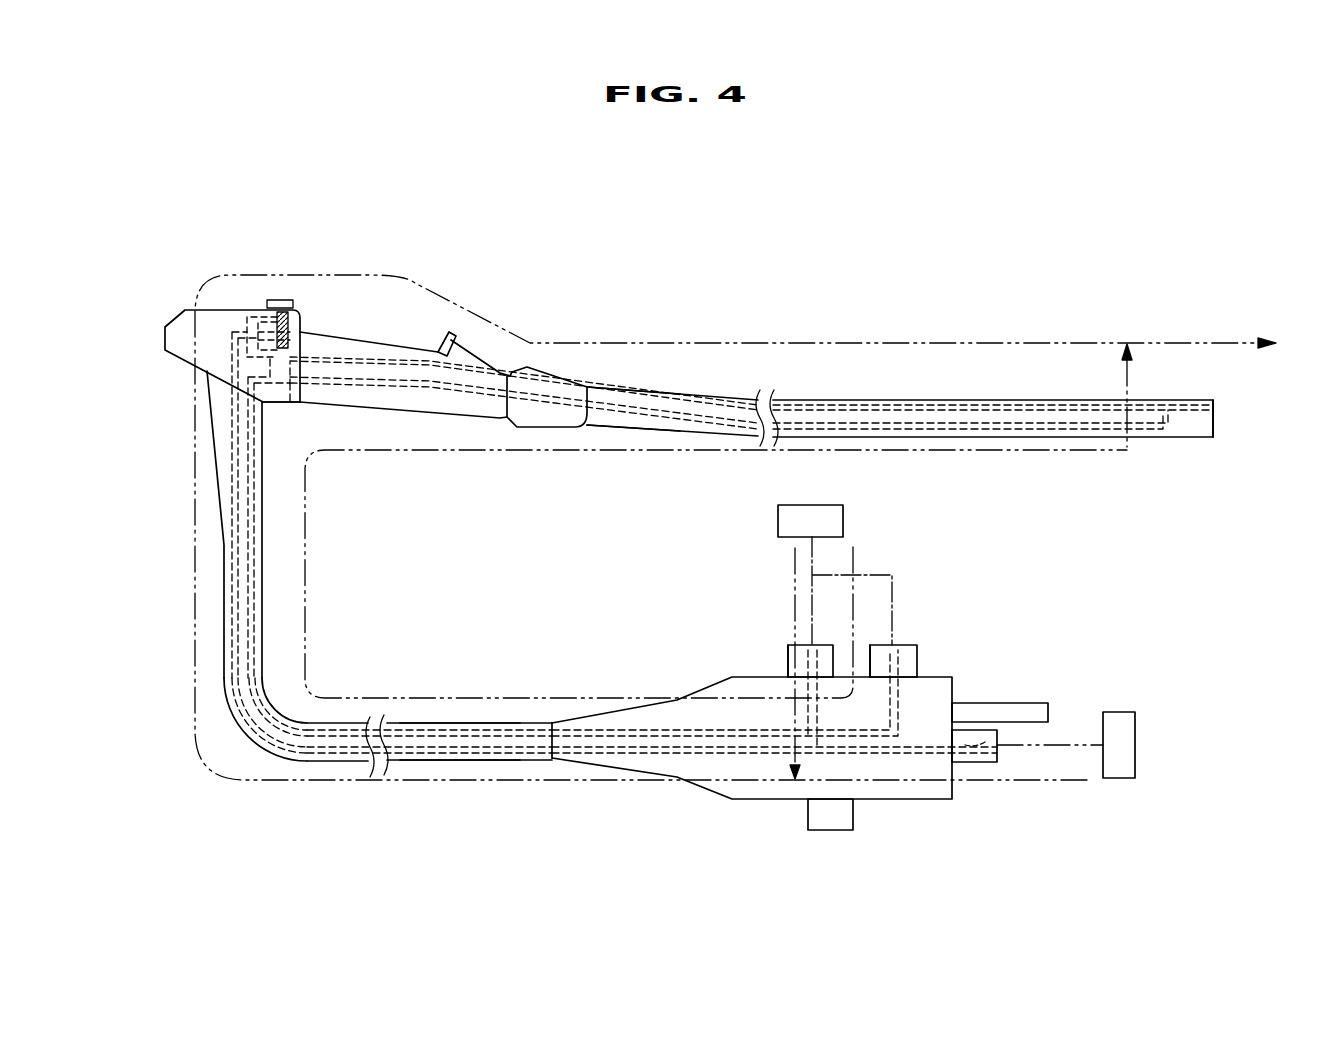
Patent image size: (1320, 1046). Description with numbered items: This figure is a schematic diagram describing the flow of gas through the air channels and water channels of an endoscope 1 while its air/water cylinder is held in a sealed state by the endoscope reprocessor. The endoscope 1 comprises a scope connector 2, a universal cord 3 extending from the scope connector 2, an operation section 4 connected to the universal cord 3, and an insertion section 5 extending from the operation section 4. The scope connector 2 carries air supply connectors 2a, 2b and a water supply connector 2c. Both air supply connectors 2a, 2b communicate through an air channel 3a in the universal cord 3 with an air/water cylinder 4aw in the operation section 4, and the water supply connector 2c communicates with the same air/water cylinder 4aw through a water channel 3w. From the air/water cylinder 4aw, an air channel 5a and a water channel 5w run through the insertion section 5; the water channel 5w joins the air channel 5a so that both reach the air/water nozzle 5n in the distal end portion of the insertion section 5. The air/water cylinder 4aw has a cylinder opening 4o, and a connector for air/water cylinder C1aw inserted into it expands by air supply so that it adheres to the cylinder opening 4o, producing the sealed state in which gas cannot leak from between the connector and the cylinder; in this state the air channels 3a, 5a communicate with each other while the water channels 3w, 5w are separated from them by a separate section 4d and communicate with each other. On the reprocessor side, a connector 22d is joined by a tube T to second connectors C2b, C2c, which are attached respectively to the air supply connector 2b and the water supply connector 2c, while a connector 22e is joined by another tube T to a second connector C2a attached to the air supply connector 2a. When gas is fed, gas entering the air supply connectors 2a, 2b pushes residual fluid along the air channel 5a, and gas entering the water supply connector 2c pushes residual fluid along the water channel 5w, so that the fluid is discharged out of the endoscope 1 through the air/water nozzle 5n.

The endoscope 1 is at (988, 254).
The scope connector 2 is at (678, 783).
The air supply connector 2a is at (958, 750).
The air supply connector 2b is at (823, 657).
The water supply connector 2c is at (897, 655).
The universal cord 3 is at (298, 758).
The air channel 3a is at (460, 753).
The water channel 3w is at (460, 725).
The operation section 4 is at (167, 323).
The air/water cylinder 4aw is at (287, 408).
The separate section 4d is at (287, 347).
The cylinder opening 4o is at (306, 311).
The insertion section 5 is at (910, 399).
The air channel 5a is at (667, 400).
The air/water nozzle 5n is at (1213, 408).
The water channel 5w is at (667, 437).
The connector 22d is at (778, 525).
The connector 22e is at (1135, 730).
The connector for air/water cylinder C1aw is at (283, 302).
The second connector C2a is at (974, 763).
The second connector C2b is at (788, 666).
The second connector C2c is at (917, 668).
The tube T is at (895, 580).